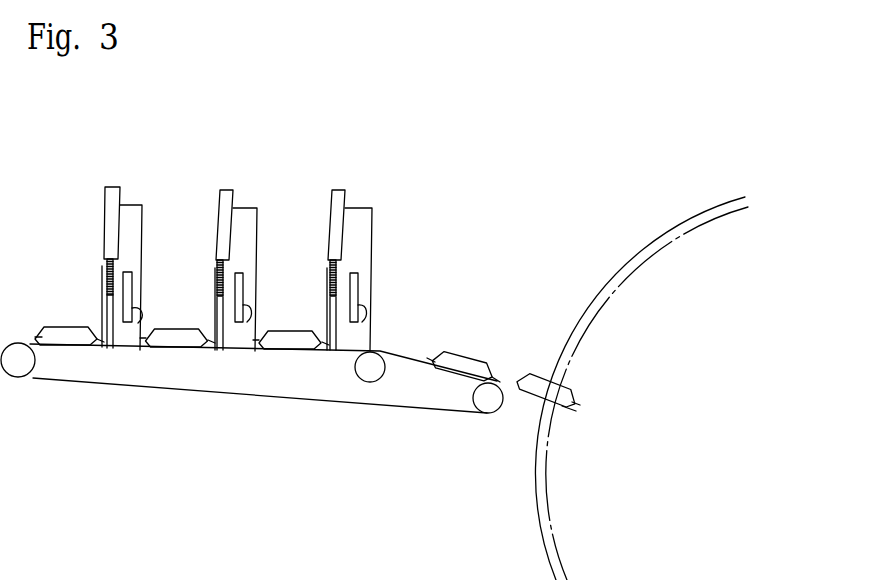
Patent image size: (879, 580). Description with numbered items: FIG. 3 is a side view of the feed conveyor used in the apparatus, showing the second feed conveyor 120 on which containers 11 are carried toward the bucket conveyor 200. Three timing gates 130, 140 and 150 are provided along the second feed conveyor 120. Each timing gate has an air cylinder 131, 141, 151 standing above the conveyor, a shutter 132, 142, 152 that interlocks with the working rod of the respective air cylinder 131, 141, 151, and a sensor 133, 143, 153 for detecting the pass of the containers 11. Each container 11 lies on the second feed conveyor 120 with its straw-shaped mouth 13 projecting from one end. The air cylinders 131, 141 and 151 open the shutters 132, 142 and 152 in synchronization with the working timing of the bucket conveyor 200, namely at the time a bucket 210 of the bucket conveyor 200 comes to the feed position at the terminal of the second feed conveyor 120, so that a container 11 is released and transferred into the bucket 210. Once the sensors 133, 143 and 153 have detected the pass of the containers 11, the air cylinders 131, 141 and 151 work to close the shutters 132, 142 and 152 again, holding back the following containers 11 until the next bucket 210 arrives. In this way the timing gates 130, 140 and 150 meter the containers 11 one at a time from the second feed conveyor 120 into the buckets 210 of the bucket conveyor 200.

The container 11 is at (62, 326).
The mouth 13 is at (97, 347).
The second feed conveyor 120 is at (208, 395).
The timing gate 130 is at (132, 202).
The air cylinder 131 is at (112, 218).
The shutter 132 is at (107, 297).
The sensor 133 is at (137, 323).
The timing gate 140 is at (246, 202).
The air cylinder 141 is at (226, 218).
The shutter 142 is at (214, 300).
The sensor 143 is at (248, 323).
The timing gate 150 is at (356, 200).
The air cylinder 151 is at (333, 218).
The shutter 152 is at (326, 302).
The sensor 153 is at (360, 302).
The bucket conveyor 200 is at (604, 272).
The bucket 210 is at (568, 411).